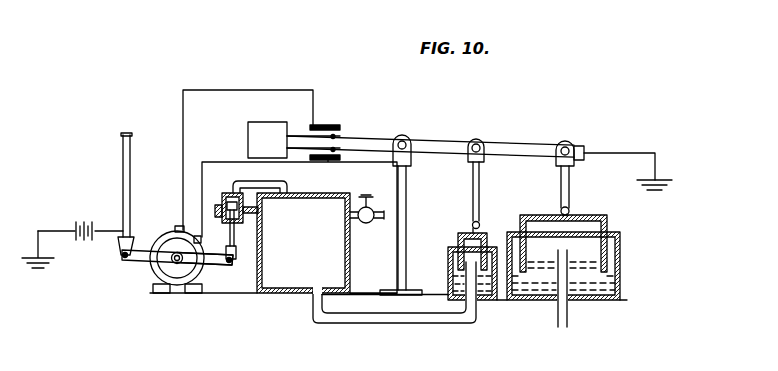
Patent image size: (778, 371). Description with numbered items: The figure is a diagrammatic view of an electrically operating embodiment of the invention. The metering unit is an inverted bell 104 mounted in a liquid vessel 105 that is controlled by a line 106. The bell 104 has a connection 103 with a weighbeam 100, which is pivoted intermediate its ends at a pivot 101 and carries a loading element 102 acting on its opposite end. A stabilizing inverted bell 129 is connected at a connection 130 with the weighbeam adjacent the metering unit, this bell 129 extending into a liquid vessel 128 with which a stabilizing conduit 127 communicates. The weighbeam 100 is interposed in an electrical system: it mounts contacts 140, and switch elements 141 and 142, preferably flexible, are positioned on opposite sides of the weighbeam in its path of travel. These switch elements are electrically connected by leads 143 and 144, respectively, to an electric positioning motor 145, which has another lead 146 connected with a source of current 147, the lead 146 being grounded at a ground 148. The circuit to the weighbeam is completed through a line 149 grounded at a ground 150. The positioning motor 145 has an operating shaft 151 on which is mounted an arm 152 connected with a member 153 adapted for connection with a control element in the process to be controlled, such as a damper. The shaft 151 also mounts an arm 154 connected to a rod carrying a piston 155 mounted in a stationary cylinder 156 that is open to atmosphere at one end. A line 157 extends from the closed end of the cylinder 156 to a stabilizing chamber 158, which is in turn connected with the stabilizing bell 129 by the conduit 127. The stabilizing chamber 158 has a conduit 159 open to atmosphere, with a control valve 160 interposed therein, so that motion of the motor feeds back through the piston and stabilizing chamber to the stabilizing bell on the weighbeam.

The weighbeam 100 is at (508, 140).
The pivot 101 is at (405, 136).
The loading element 102 is at (258, 131).
The connection 103 is at (568, 181).
The inverted bell 104 is at (585, 217).
The liquid vessel 105 is at (620, 252).
The line 106 is at (567, 318).
The stabilizing conduit 127 is at (433, 321).
The liquid vessel 128 is at (449, 263).
The stabilizing inverted bell 129 is at (460, 234).
The connection 130 is at (474, 183).
The contacts 140 is at (333, 149).
The switch element 141 is at (315, 126).
The switch element 142 is at (329, 161).
The lead 143 is at (238, 90).
The lead 144 is at (236, 162).
The electric positioning motor 145 is at (168, 270).
The lead 146 is at (40, 231).
The source of current 147 is at (84, 228).
The ground 148 is at (33, 266).
The line 149 is at (631, 152).
The ground 150 is at (662, 186).
The operating shaft 151 is at (180, 262).
The arm 152 is at (138, 259).
The member 153 is at (126, 180).
The arm 154 is at (226, 263).
The piston 155 is at (228, 188).
The stationary cylinder 156 is at (230, 235).
The line 157 is at (282, 183).
The stabilizing chamber 158 is at (291, 283).
The conduit 159 is at (364, 224).
The control valve 160 is at (367, 194).